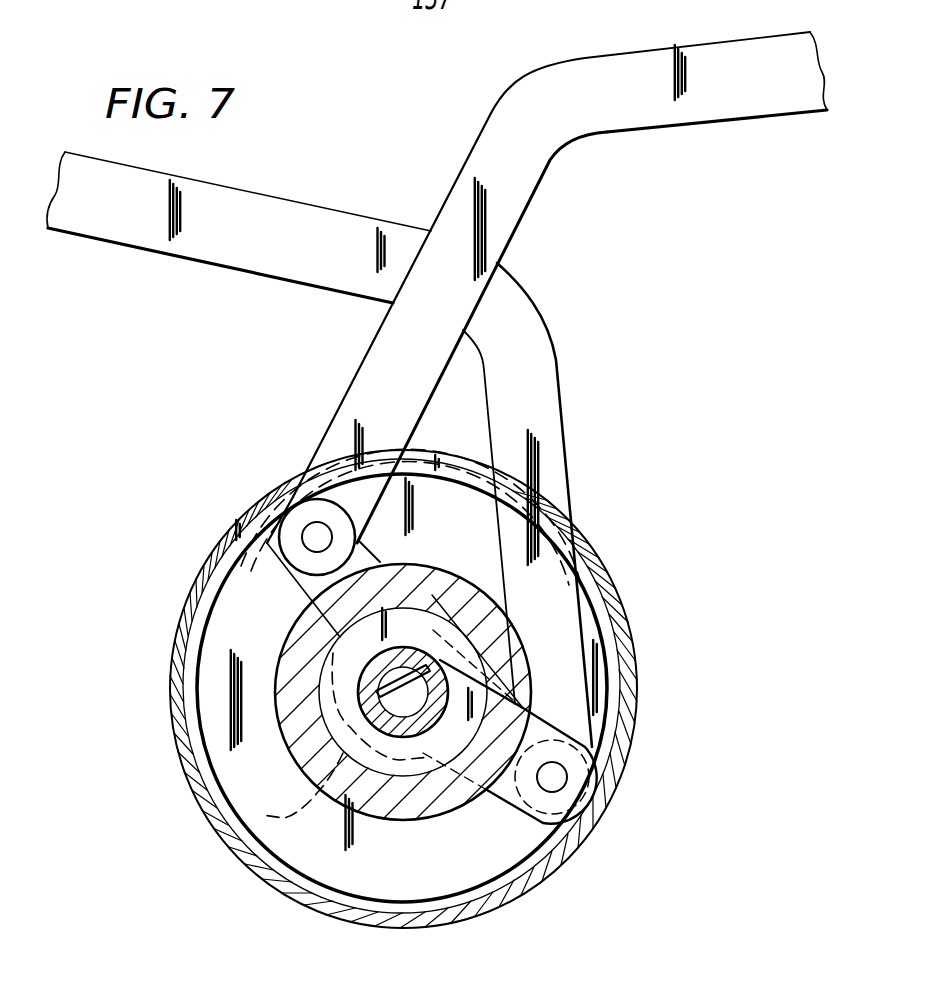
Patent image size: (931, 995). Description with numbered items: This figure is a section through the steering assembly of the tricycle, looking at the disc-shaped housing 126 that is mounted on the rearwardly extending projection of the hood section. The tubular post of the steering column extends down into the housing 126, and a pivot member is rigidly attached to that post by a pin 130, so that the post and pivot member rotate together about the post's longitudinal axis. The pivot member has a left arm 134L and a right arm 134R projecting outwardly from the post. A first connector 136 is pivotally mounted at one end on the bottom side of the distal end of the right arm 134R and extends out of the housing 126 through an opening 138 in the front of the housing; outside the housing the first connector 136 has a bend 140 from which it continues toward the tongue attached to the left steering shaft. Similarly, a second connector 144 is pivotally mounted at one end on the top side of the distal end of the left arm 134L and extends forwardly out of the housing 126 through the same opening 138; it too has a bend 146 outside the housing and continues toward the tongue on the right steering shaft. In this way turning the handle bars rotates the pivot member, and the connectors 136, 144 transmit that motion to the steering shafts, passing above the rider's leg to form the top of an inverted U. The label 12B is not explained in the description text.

The handle arm 144 is at (697, 47).
The bent strut 146 is at (557, 66).
The cross arm 136 is at (257, 193).
The link arm 140 is at (508, 302).
The brake band 138 is at (227, 553).
The left pivot hub 134L is at (298, 569).
The right pivot hub 134R is at (507, 792).
The wheel hub disc 130 is at (455, 575).
The wheel 126 is at (170, 632).
The base member 12B is at (338, 735).